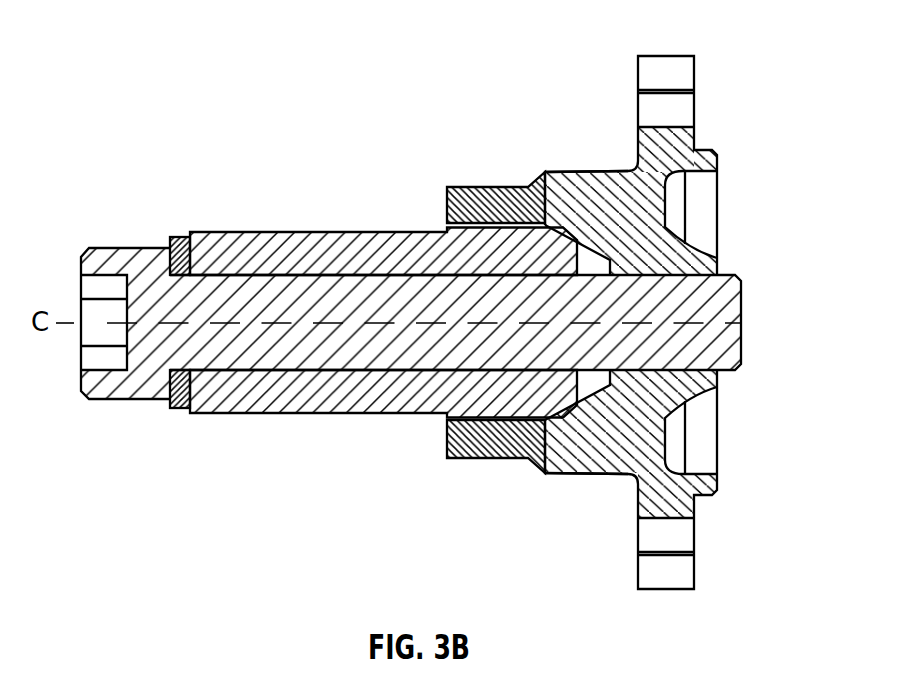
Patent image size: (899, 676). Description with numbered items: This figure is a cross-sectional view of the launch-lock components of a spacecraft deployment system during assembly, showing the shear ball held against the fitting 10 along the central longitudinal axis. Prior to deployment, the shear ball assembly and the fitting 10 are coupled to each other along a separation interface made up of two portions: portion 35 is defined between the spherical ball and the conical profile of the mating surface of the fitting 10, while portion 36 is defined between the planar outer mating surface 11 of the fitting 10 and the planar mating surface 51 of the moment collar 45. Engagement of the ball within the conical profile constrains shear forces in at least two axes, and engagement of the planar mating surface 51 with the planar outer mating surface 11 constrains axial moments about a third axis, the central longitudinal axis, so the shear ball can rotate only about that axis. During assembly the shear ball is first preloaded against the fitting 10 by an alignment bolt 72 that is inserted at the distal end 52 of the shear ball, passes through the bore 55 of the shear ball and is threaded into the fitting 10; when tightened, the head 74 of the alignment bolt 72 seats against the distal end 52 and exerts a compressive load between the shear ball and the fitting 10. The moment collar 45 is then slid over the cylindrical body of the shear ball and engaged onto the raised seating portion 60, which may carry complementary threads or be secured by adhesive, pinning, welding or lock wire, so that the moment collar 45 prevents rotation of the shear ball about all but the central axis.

The fitting 10 is at (642, 309).
The planar outer mating surface 11 is at (642, 322).
The portion of the separation interface 35 is at (548, 214).
The portion of the separation interface 36 is at (547, 197).
The moment collar 45 is at (465, 178).
The planar mating surface 51 is at (545, 185).
The distal end 52 is at (171, 405).
The bore 55 is at (330, 275).
The raised seating portion 60 is at (436, 291).
The alignment bolt 72 is at (411, 285).
The head 74 is at (134, 250).